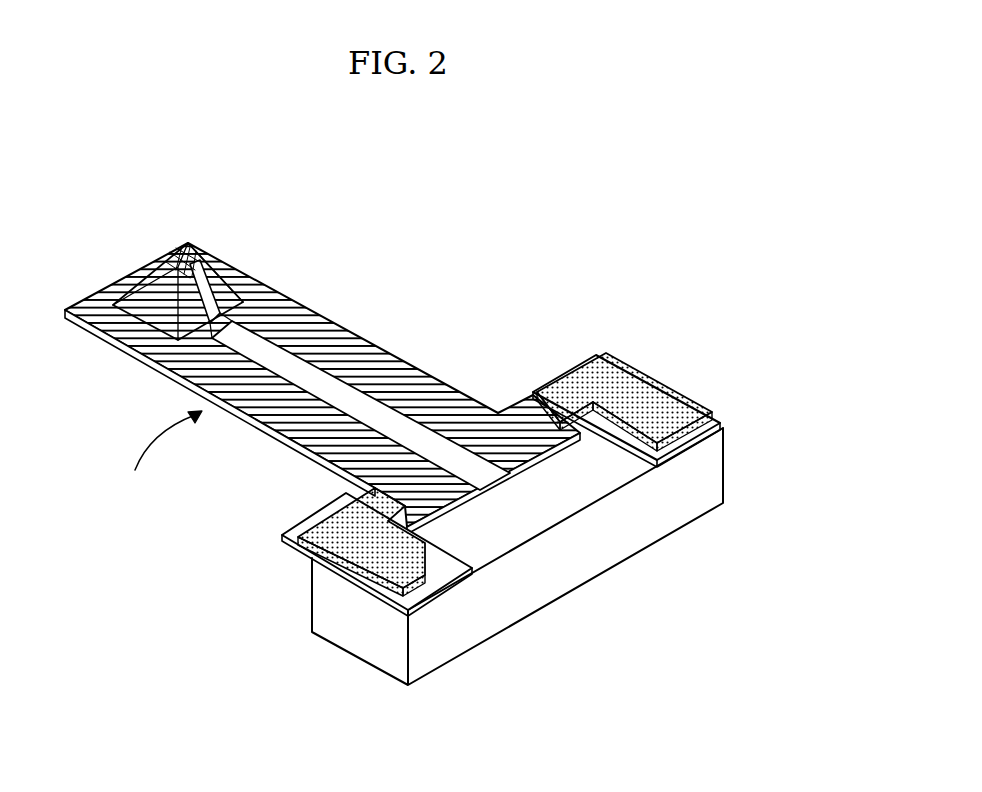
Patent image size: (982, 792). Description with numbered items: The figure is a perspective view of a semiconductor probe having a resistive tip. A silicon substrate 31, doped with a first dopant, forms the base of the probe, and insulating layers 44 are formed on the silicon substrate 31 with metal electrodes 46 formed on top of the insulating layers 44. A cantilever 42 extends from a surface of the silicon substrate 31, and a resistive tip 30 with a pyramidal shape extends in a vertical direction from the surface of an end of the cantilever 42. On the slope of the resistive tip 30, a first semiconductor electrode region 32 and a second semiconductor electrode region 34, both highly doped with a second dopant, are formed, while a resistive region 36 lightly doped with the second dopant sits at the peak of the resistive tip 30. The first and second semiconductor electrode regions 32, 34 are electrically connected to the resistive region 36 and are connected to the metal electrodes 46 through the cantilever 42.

The resistive tip 30 is at (315, 351).
The silicon substrate 31 is at (700, 490).
The first semiconductor electrode region 32 is at (262, 297).
The second semiconductor electrode region 34 is at (95, 305).
The resistive region 36 is at (187, 240).
The cantilever 42 is at (150, 447).
The insulating layer 44 is at (423, 585).
The metal electrode 46 is at (310, 556).